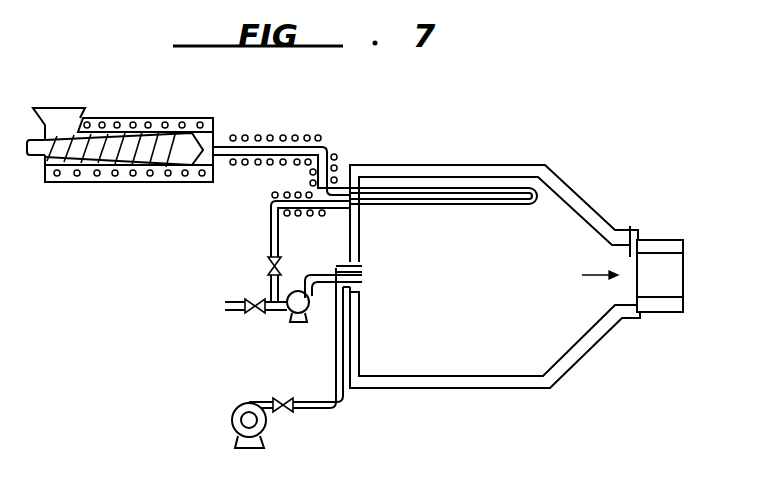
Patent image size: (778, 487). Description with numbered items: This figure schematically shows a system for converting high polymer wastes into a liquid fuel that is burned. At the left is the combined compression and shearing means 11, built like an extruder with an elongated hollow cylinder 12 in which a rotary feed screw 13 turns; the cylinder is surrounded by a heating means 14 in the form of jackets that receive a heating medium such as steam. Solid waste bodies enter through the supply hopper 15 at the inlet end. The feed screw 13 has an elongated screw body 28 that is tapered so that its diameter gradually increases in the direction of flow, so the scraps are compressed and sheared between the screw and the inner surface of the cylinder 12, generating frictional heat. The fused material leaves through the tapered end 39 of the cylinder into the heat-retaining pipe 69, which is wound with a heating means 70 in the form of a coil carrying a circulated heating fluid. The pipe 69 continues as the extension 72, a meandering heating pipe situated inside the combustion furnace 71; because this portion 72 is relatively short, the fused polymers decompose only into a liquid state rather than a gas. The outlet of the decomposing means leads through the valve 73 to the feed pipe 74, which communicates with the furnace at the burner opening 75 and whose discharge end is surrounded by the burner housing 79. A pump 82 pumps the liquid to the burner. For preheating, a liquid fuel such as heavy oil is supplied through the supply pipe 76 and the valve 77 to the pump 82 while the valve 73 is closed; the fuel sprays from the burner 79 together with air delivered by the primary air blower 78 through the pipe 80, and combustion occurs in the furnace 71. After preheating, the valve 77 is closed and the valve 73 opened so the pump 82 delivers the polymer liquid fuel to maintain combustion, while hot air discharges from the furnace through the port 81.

The combined compression and shearing means 11 is at (136, 146).
The elongated hollow cylinder 12 is at (126, 123).
The rotary feed screw 13 is at (115, 172).
The heating means 14 is at (102, 123).
The supply hopper 15 is at (62, 115).
The elongated screw body 28 is at (105, 155).
The tapered end 39 is at (213, 138).
The heat-retaining pipe 69 is at (277, 146).
The heating means 70 is at (328, 145).
The combustion furnace 71 is at (516, 265).
The extension of the pipe 72 is at (427, 207).
The valve 73 is at (268, 267).
The feed pipe 74 is at (328, 282).
The burner opening 75 is at (363, 290).
The supply pipe 76 is at (232, 307).
The valve 77 is at (248, 313).
The primary air blower 78 is at (252, 404).
The burner housing 79 is at (362, 272).
The pipe 80 is at (323, 410).
The port 81 is at (630, 228).
The pump 82 is at (298, 322).